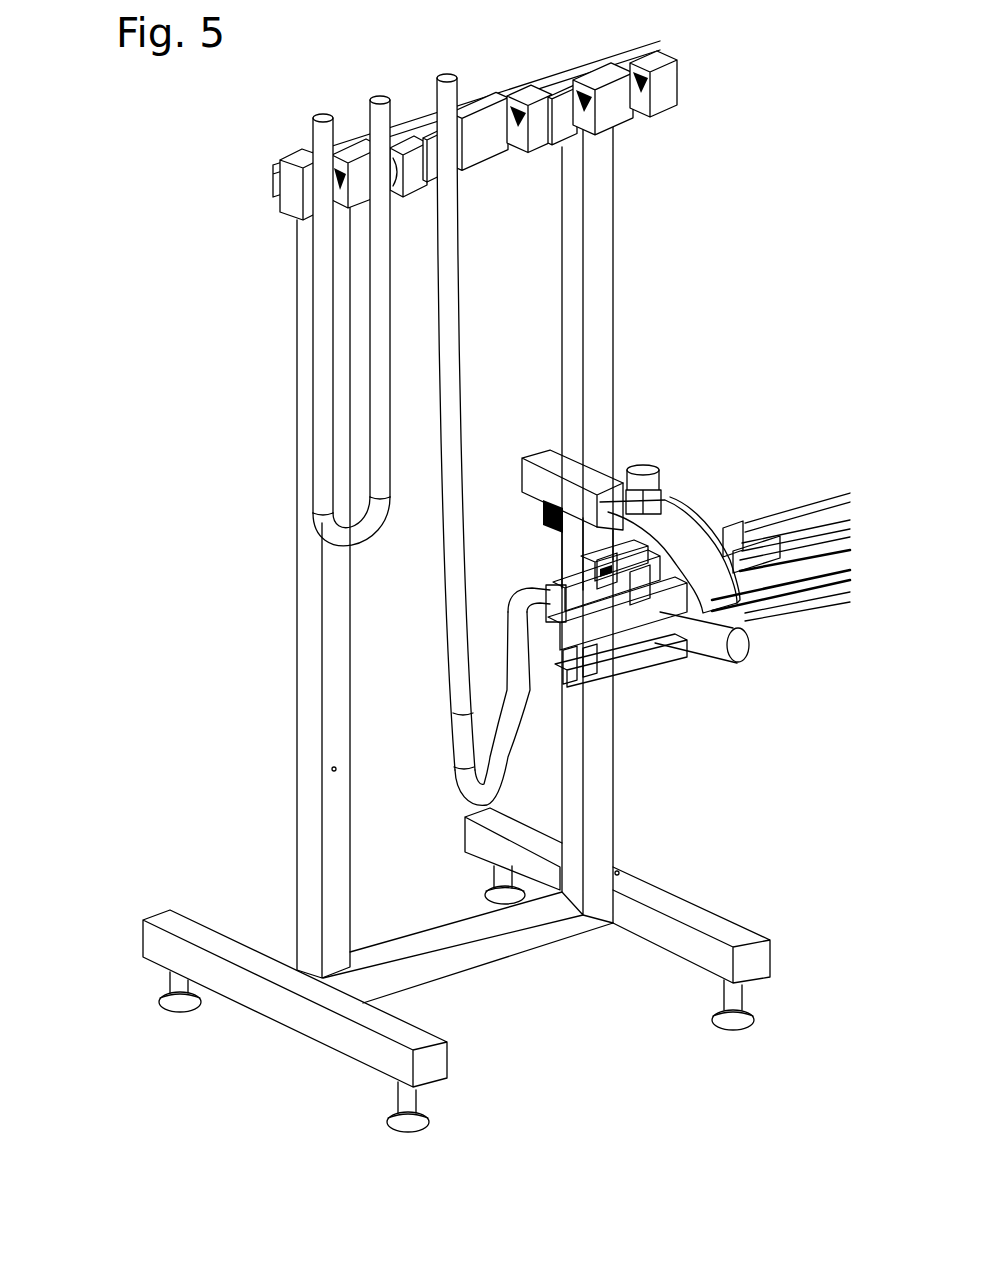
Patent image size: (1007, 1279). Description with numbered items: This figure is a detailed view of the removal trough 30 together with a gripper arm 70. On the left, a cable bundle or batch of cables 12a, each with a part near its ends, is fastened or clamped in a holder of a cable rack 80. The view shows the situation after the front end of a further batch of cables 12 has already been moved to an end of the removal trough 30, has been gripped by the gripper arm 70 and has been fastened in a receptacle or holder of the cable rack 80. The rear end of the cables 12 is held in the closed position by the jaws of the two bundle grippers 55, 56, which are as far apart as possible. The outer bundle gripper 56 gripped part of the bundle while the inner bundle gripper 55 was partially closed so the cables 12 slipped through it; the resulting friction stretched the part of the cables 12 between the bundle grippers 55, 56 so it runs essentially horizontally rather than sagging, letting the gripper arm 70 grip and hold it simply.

The cable rack 80 is at (192, 463).
The cable bundle 12a is at (322, 327).
The further cable bundle 12 is at (456, 271).
The gripper arm 70 is at (595, 482).
The removal trough 30 is at (735, 488).
The inner bundle gripper 55 is at (651, 643).
The outer bundle gripper 56 is at (596, 661).